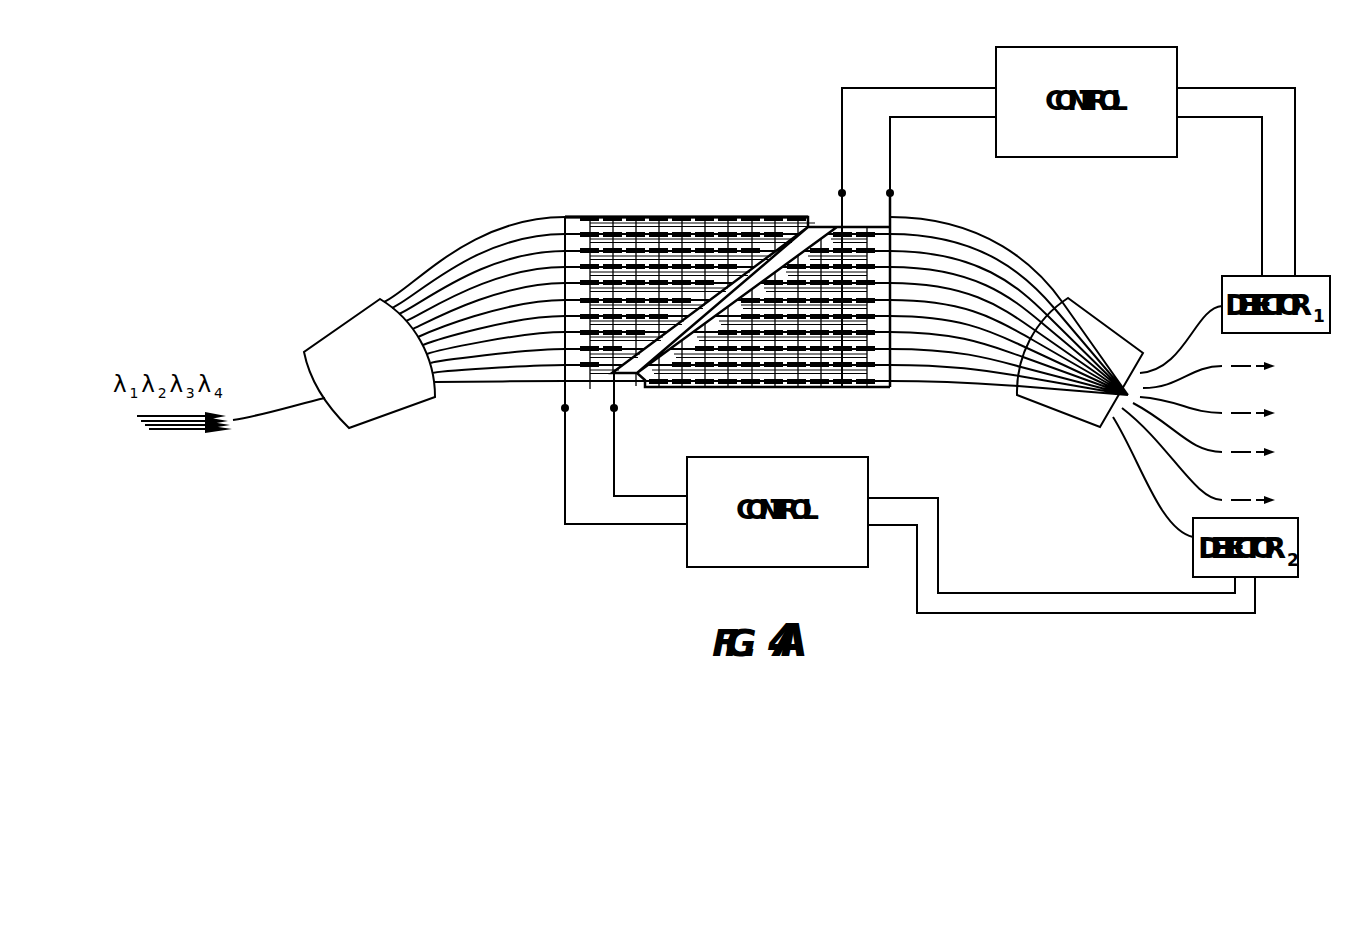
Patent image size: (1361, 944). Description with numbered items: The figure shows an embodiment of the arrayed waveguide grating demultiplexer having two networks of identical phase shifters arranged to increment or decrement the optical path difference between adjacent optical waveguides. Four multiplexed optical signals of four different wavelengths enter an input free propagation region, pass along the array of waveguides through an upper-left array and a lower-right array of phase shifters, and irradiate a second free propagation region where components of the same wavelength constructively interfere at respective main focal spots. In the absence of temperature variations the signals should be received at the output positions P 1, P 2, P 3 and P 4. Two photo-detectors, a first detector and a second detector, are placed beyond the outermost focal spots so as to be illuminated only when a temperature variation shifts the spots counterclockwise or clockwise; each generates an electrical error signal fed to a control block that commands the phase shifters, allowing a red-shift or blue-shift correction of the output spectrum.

The output port P1 1 is at (1228, 367).
The output port P2 2 is at (1227, 413).
The output port P3 3 is at (1223, 437).
The output port P4 4 is at (1218, 463).